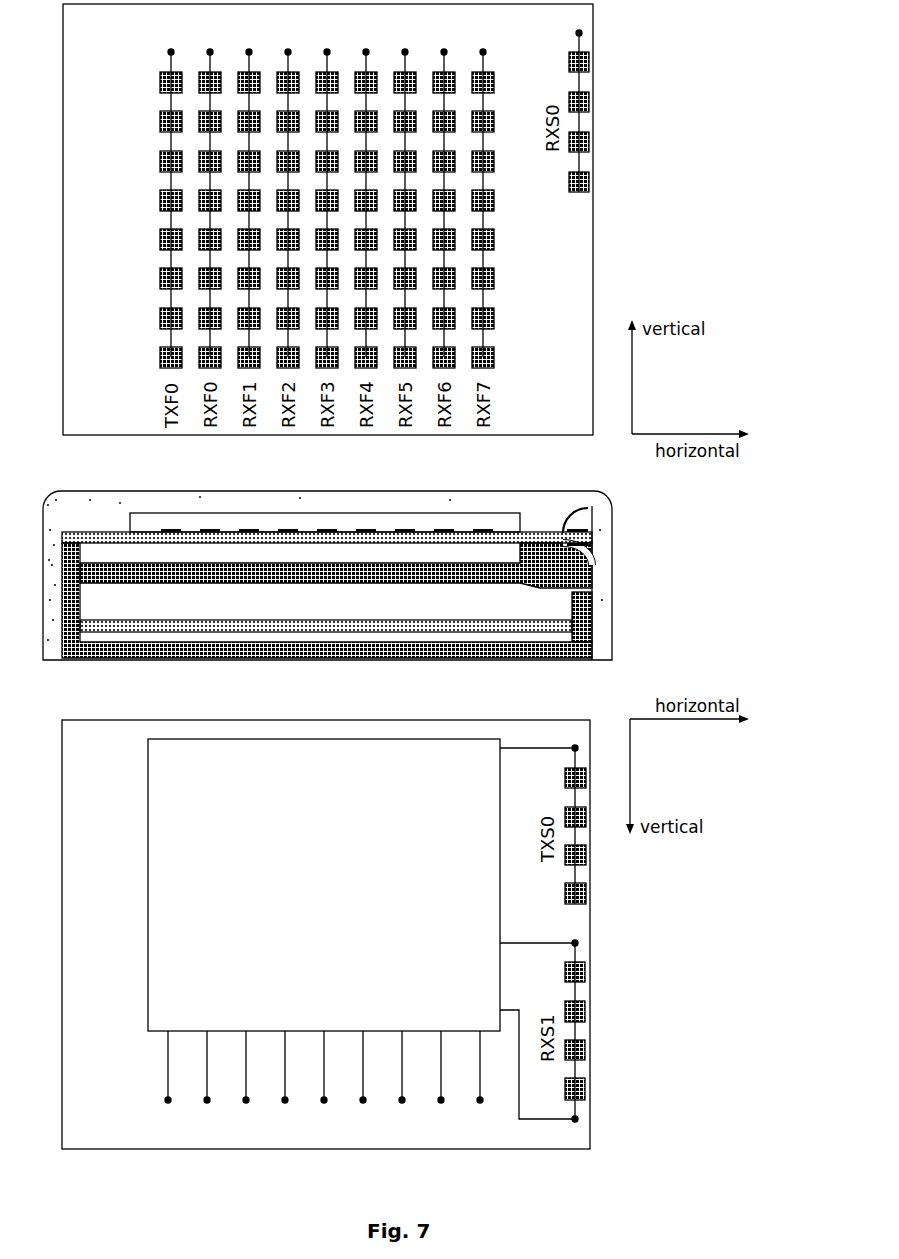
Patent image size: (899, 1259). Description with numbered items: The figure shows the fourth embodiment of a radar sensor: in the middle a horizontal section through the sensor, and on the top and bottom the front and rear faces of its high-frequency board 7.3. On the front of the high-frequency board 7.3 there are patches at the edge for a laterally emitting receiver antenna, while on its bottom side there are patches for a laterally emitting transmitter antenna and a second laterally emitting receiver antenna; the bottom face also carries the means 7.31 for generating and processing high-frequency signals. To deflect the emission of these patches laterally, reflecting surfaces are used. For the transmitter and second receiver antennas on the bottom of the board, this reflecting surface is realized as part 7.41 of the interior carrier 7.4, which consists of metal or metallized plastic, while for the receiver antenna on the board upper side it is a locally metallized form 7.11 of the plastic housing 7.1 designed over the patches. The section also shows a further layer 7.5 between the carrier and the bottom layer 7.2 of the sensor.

The plastic housing 7.1 is at (567, 507).
The locally metallized form of the plastic housing 7.11 is at (563, 520).
The carrier / bottom substrate layer 7.2 is at (552, 648).
The high-frequency board 7.3 is at (593, 43).
The means for generating and processing high frequency signals 7.31 is at (187, 988).
The interior carrier 7.4 is at (557, 573).
The part of the interior carrier 7.41 is at (575, 560).
The intermediate electrode layer 7.5 is at (552, 623).